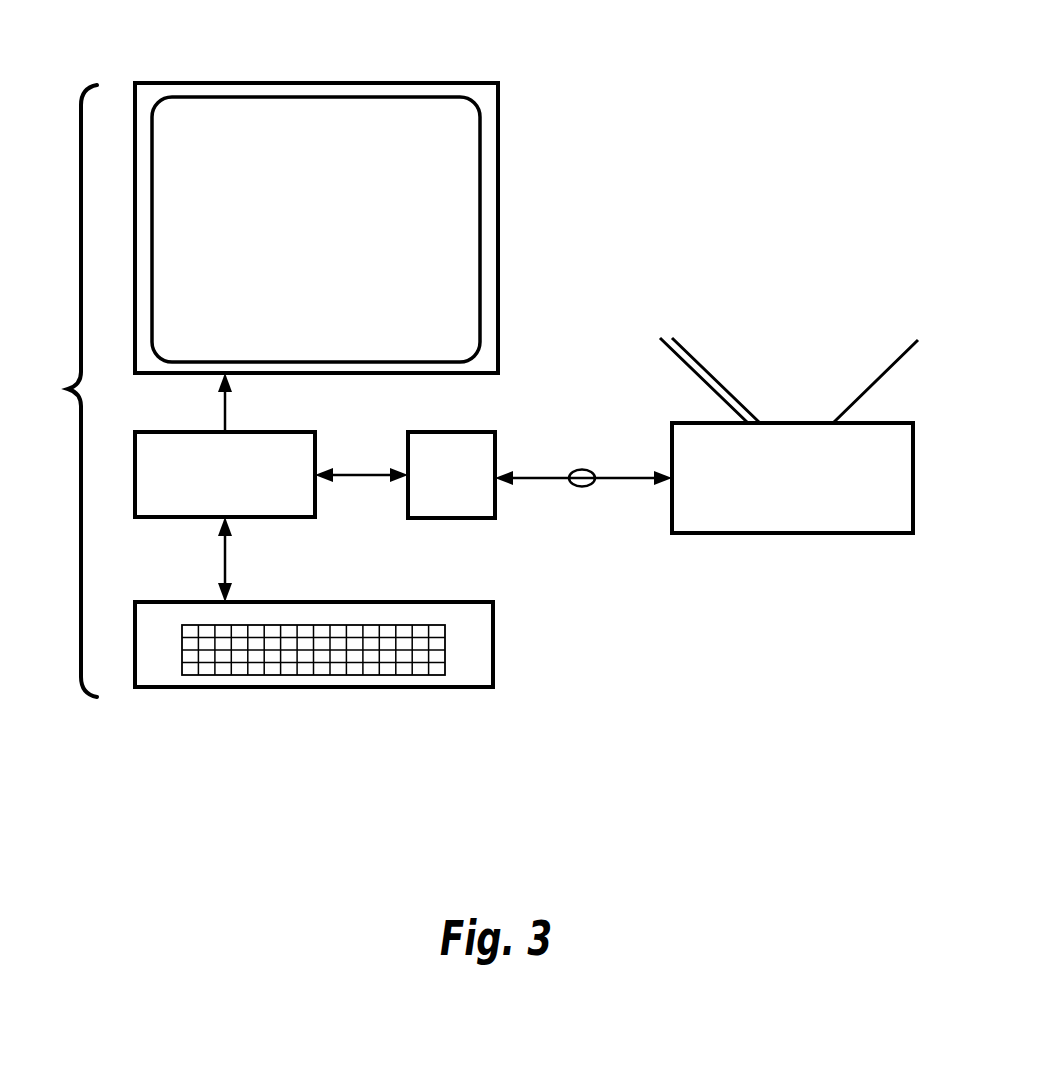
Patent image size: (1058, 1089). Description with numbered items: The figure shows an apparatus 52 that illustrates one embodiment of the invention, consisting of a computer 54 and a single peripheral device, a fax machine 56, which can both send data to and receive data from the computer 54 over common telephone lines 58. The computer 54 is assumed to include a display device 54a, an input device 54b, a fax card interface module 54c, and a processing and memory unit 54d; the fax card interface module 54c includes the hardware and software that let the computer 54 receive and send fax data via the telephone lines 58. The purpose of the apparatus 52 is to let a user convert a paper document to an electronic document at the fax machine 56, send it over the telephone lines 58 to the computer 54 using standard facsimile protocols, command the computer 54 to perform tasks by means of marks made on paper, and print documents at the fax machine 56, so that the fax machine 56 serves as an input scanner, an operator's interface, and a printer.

The apparatus 52 is at (700, 90).
The computer 54 is at (65, 391).
The display device 54a is at (317, 83).
The input device 54b is at (320, 687).
The fax card interface module 54c is at (450, 518).
The processing and memory unit 54d is at (277, 517).
The fax machine 56 is at (770, 533).
The telephone lines 58 is at (582, 469).